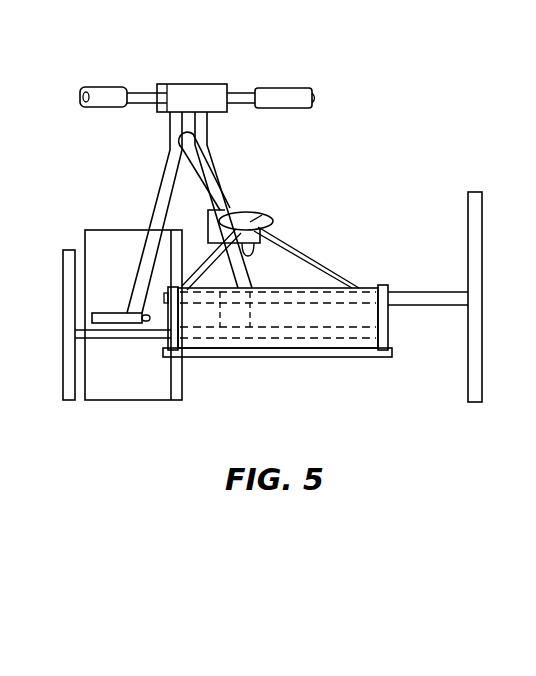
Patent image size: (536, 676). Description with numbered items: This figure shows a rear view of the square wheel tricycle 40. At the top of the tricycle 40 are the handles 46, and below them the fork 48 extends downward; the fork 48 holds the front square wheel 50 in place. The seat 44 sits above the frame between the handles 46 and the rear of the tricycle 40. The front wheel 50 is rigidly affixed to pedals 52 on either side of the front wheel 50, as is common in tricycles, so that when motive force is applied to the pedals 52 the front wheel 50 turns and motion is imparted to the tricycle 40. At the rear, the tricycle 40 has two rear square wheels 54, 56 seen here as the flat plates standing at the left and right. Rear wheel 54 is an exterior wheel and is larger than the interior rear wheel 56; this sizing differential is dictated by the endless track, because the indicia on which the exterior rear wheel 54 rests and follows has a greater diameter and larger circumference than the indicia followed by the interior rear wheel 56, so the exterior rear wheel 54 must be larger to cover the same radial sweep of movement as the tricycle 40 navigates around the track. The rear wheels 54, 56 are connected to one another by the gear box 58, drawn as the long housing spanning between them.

The tricycle 40 is at (394, 48).
The seat 44 is at (250, 218).
The handles 46 is at (242, 98).
The fork 48 is at (162, 200).
The front square wheel 50 is at (128, 383).
The pedals 52 is at (118, 312).
The exterior rear square wheel 54 is at (472, 365).
The interior rear square wheel 56 is at (67, 373).
The gear box 58 is at (383, 315).